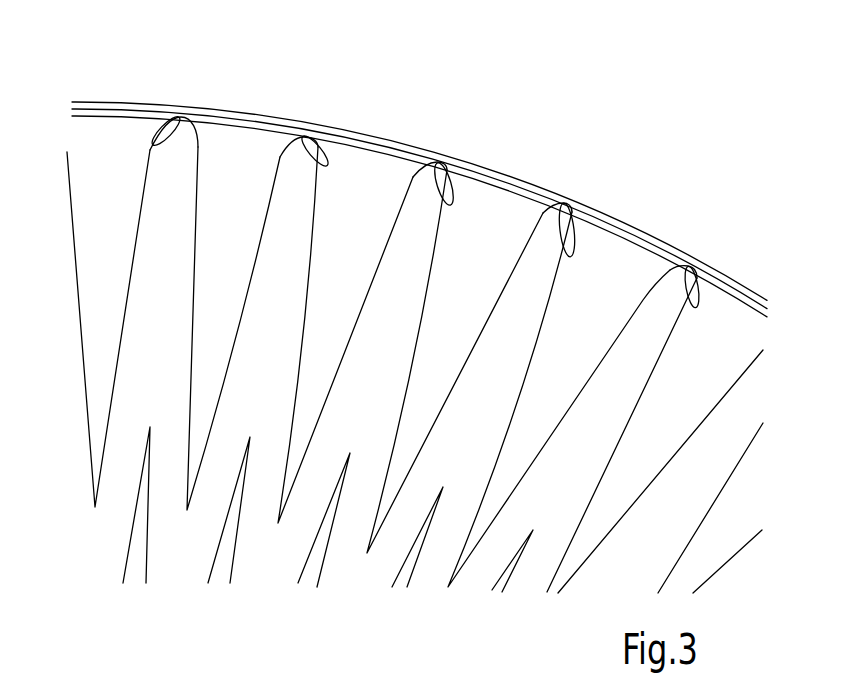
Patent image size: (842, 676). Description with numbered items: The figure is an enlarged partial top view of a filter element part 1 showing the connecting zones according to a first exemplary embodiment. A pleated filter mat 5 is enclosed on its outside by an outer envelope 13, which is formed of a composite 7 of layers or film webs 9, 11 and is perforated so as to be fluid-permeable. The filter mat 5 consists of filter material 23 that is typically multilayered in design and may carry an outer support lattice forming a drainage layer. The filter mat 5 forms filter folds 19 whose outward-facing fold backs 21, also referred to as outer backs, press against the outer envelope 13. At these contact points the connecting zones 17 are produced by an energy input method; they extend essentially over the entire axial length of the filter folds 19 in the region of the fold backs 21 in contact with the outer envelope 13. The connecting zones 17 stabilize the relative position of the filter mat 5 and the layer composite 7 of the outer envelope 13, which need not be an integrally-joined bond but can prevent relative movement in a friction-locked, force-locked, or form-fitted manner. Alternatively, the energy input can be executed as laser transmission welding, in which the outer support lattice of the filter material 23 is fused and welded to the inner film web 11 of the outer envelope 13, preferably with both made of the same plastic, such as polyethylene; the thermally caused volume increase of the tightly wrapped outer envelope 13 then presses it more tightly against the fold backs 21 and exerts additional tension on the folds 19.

The filter element part 1 is at (664, 138).
The pleated filter mat 5 is at (280, 178).
The composite 7 is at (390, 128).
The film web 9 is at (500, 175).
The inner film web 11 is at (617, 239).
The outer envelope 13 is at (543, 181).
The connecting zones 17 is at (180, 112).
The filter folds 19 is at (72, 212).
The fold backs 21 is at (153, 145).
The filter material 23 is at (153, 343).